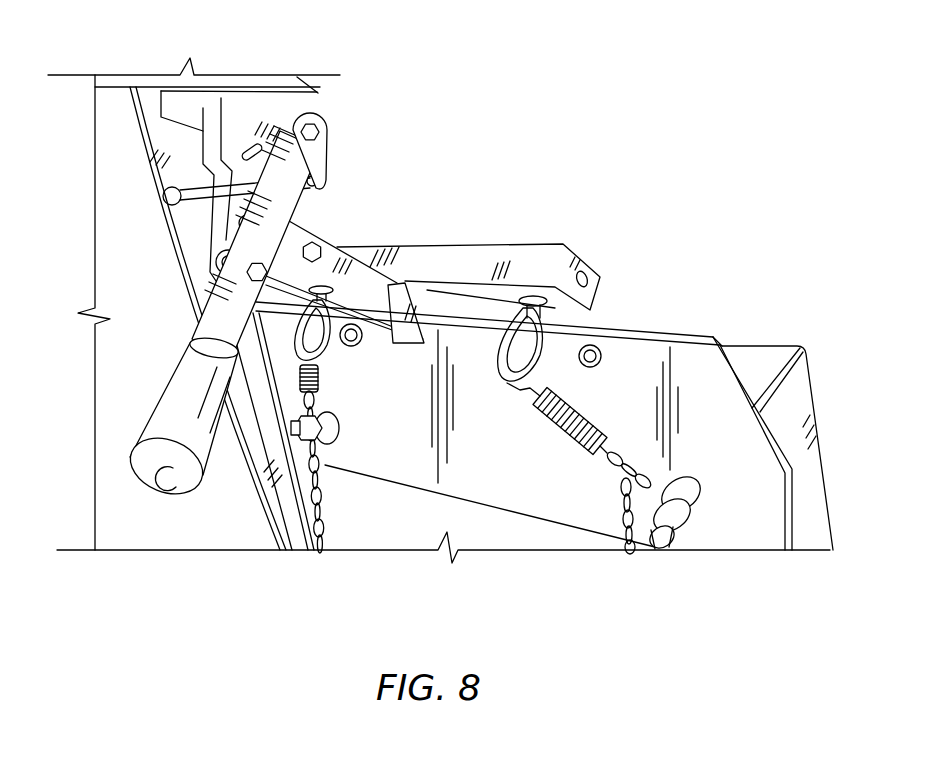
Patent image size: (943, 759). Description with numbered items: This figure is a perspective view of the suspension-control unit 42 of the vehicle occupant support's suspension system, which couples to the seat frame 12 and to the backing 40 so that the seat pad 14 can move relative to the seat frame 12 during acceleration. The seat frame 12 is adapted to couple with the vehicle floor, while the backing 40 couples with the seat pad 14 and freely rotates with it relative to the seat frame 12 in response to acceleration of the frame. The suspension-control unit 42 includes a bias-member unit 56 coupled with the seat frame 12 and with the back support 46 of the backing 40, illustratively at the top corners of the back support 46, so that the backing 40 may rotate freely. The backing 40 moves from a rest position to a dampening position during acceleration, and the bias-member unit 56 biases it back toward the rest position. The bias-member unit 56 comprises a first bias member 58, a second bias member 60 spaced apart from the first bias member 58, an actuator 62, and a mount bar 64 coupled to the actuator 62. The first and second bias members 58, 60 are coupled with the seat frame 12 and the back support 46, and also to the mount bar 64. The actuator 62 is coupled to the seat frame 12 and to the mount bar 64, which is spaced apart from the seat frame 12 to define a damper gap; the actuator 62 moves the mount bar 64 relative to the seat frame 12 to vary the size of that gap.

The seat frame 12 is at (170, 262).
The seat pad 14 is at (808, 340).
The backing 40 is at (689, 326).
The suspension-control unit 42 is at (438, 81).
The back support 46 is at (705, 362).
The bias-member unit 56 is at (294, 386).
The first bias member 58 is at (336, 377).
The second bias member 60 is at (565, 453).
The actuator 62 is at (342, 213).
The mount bar 64 is at (470, 242).